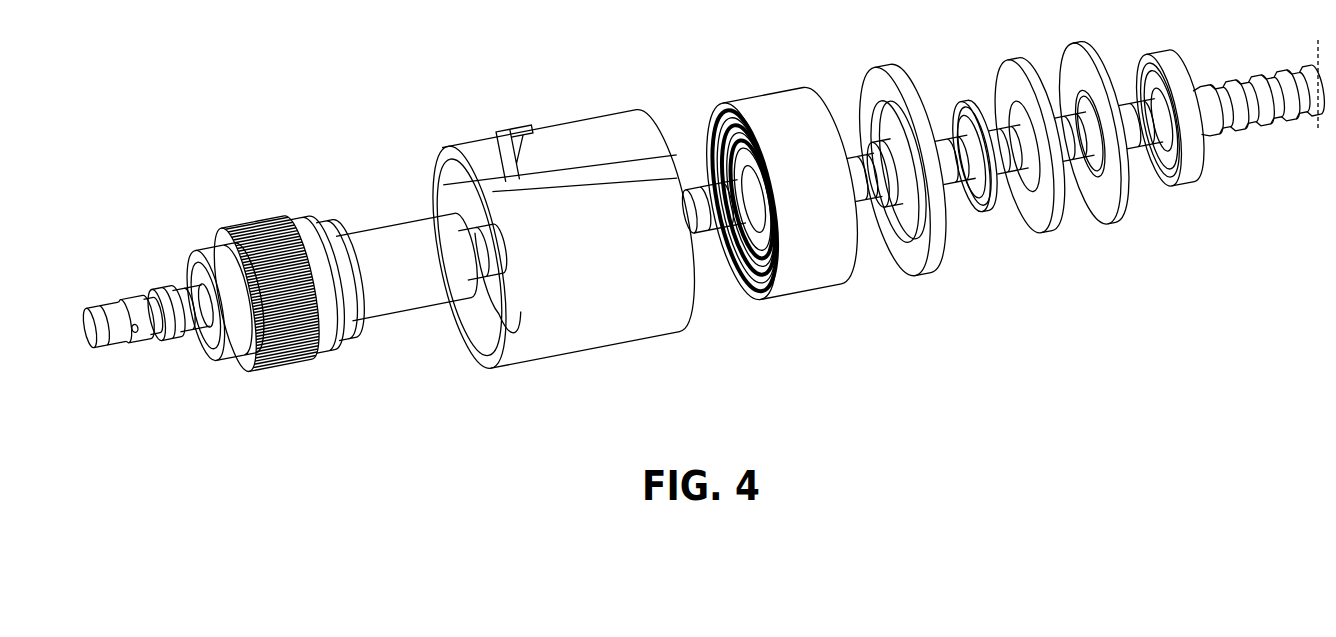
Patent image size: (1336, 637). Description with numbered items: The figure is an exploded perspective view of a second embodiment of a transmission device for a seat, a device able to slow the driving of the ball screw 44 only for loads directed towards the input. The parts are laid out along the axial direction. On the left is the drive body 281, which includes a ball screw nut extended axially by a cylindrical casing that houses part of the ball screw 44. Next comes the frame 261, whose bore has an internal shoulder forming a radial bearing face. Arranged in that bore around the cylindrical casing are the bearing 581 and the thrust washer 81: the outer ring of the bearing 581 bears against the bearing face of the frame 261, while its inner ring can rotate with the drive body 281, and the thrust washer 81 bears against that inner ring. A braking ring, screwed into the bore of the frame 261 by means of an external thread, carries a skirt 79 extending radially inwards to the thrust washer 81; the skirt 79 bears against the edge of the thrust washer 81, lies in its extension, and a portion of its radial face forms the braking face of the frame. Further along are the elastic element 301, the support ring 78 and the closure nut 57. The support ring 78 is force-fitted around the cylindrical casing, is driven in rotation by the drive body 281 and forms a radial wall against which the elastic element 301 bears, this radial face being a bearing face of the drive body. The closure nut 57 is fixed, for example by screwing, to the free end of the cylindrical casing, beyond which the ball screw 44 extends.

The drive body 281 is at (352, 360).
The frame 261 is at (571, 325).
The bearing 581 is at (803, 278).
The skirt 79 is at (935, 250).
The thrust washer 81 is at (984, 207).
The elastic element 301 is at (1043, 215).
The support ring 78 is at (1130, 203).
The closure nut 57 is at (1193, 163).
The ball screw 44 is at (1258, 108).